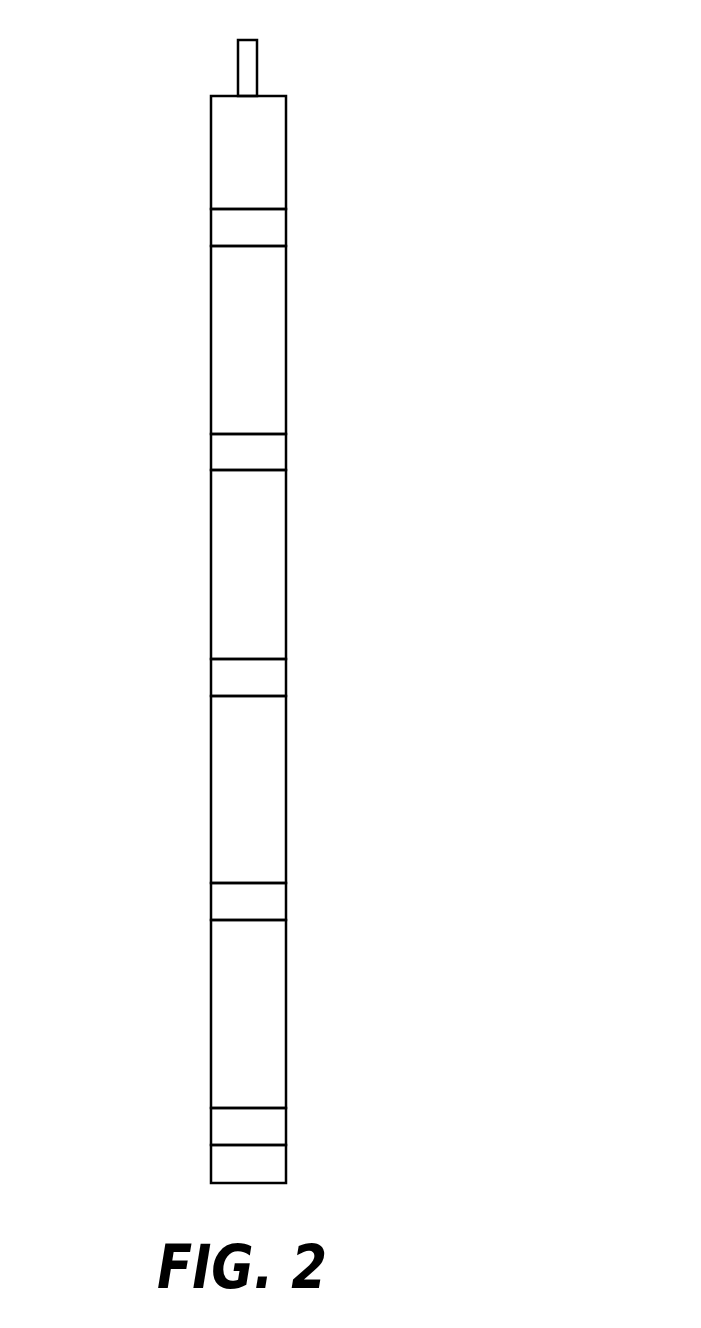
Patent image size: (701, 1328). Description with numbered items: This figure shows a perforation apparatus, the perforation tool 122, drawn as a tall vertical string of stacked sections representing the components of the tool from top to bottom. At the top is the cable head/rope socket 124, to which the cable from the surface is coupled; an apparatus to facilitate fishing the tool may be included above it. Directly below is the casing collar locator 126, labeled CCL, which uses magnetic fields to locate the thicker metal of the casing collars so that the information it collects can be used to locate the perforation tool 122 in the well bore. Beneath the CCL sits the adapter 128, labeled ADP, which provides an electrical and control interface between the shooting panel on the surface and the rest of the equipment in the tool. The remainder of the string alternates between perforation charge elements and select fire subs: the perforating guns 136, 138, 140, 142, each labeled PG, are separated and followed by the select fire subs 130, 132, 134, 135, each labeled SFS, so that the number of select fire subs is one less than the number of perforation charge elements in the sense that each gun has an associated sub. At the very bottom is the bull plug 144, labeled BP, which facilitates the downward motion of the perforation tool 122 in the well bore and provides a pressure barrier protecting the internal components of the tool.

The perforation tool 122 is at (478, 124).
The cable head/rope socket 124 is at (238, 67).
The casing collar locator 126 is at (211, 152).
The adapter 128 is at (211, 228).
The select fire sub 130 is at (211, 452).
The select fire sub 132 is at (211, 677).
The select fire sub 134 is at (211, 902).
The select fire sub 135 is at (211, 1126).
The perforation charge element 136 is at (211, 335).
The perforation charge element 138 is at (211, 565).
The perforation charge element 140 is at (211, 787).
The perforation charge element 142 is at (211, 1013).
The bull plug 144 is at (211, 1163).